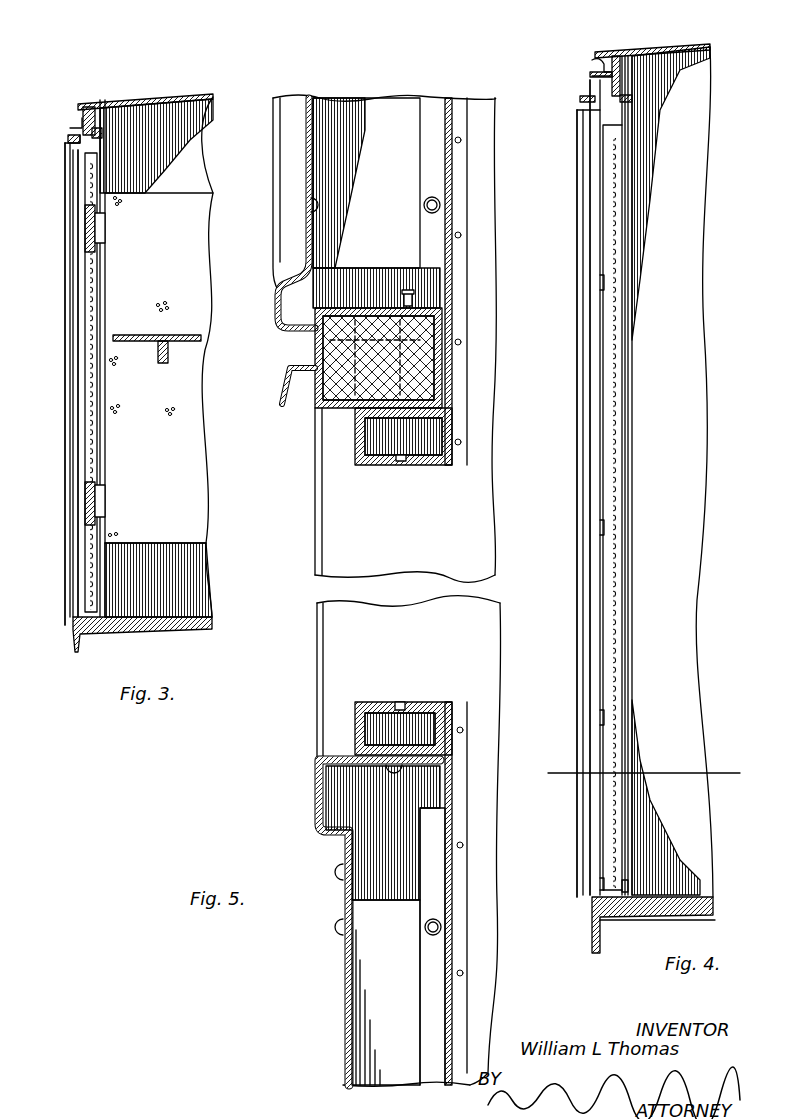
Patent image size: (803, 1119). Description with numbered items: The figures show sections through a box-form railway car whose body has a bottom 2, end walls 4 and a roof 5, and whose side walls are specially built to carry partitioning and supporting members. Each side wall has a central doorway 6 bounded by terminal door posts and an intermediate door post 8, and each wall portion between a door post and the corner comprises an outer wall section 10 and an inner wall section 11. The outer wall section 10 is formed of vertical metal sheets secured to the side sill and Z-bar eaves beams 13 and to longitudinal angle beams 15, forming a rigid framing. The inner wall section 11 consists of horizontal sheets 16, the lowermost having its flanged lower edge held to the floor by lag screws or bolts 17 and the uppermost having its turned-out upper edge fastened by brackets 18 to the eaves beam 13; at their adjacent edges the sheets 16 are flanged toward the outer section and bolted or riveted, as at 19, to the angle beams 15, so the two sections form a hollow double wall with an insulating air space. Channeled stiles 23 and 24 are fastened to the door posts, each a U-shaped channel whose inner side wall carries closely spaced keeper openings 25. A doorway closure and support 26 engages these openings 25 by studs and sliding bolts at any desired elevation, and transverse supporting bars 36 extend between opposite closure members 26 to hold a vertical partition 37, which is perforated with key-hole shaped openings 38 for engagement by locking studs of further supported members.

In FIG. 3, the bottom 2 is at (187, 618).
In FIG. 5, the bottom 2 is at (473, 502).
In FIG. 4, the bottom 2 is at (690, 897).
In FIG. 3, the end wall 4 is at (188, 127).
In FIG. 4, the end wall 4 is at (683, 130).
In FIG. 3, the roof 5 is at (177, 102).
In FIG. 4, the roof 5 is at (677, 49).
In FIG. 3, the doorway 6 is at (54, 384).
In FIG. 4, the doorway 6 is at (567, 503).
In FIG. 3, the intermediate door post 8 is at (77, 408).
In FIG. 5, the intermediate door post 8 is at (340, 401).
In FIG. 4, the intermediate door post 8 is at (600, 432).
In FIG. 5, the outer wall section 10 is at (302, 157).
In FIG. 5, the inner wall section 11 is at (456, 166).
In FIG. 3, the Z-bar eaves beam 13 is at (78, 121).
In FIG. 4, the Z-bar eaves beam 13 is at (592, 69).
In FIG. 5, the longitudinal angle beam 15 is at (378, 105).
In FIG. 3, the inner wall sheet 16 is at (100, 171).
In FIG. 5, the inner wall sheet 16 is at (452, 222).
In FIG. 4, the inner wall sheet 16 is at (625, 240).
In FIG. 5, the lag screw or bolt 17 is at (461, 342).
In FIG. 4, the lag screw or bolt 17 is at (630, 892).
In FIG. 3, the bracket 18 is at (97, 123).
In FIG. 4, the bracket 18 is at (618, 82).
In FIG. 5, the bolt or rivet 19 is at (439, 207).
In FIG. 3, the channeled stile 23 is at (87, 327).
In FIG. 5, the channeled stile 23 is at (380, 438).
In FIG. 4, the channeled stile 23 is at (608, 385).
In FIG. 5, the channeled stile 24 is at (375, 728).
In FIG. 3, the keeper opening 25 is at (88, 287).
In FIG. 5, the keeper opening 25 is at (407, 462).
In FIG. 4, the keeper opening 25 is at (612, 367).
In FIG. 3, the doorway closure and support 26 is at (86, 228).
In FIG. 3, the transverse supporting bar 36 is at (103, 231).
In FIG. 3, the vertical partition 37 is at (200, 243).
In FIG. 3, the slot or opening 38 is at (163, 302).